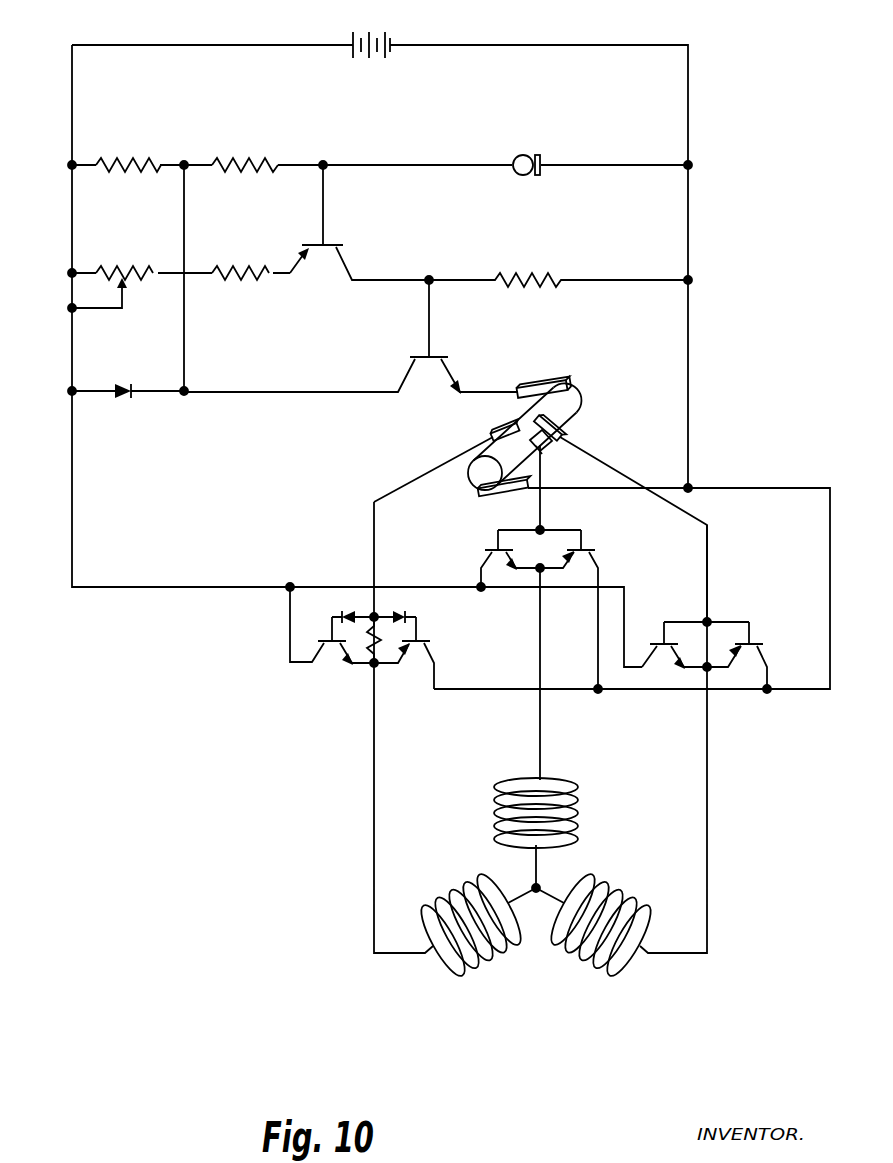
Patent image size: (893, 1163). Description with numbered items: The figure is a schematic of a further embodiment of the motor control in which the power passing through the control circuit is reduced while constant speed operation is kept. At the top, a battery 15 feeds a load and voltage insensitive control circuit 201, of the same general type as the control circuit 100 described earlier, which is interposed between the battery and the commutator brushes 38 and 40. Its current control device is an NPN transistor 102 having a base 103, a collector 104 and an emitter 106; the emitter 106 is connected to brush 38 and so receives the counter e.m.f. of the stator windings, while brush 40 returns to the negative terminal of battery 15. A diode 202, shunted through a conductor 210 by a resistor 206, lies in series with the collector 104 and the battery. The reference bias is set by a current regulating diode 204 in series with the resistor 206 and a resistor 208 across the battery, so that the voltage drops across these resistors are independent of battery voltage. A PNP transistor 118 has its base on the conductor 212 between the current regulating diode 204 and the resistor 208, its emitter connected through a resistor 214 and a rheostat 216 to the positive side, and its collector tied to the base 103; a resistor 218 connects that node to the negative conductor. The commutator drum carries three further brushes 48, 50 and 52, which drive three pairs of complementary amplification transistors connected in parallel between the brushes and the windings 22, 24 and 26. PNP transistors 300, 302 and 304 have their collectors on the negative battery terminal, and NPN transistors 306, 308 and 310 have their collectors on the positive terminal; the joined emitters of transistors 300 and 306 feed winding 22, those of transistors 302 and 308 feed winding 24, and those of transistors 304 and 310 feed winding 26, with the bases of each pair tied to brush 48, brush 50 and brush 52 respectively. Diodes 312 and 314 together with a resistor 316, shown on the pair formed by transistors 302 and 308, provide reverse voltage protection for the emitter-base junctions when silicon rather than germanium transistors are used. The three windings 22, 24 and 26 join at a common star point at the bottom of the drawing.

The battery 15 is at (393, 40).
The stator winding 22 is at (598, 965).
The stator winding 24 is at (460, 876).
The stator winding 26 is at (580, 806).
The brush 38 is at (542, 385).
The brush 40 is at (517, 487).
The brush 48 is at (575, 430).
The brush 50 is at (503, 427).
The brush 52 is at (548, 452).
The control circuit 100 is at (690, 203).
The current control device 102 is at (442, 356).
The base 103 is at (427, 308).
The collector 104 is at (405, 373).
The emitter 106 is at (455, 386).
The transistor 118 is at (325, 262).
The control circuit 201 is at (692, 247).
The diode 202 is at (126, 383).
The current regulating diode 204 is at (523, 154).
The resistor 206 is at (122, 153).
The resistor 208 is at (237, 152).
The conductor 210 is at (182, 316).
The conductor 212 is at (417, 160).
The resistor 214 is at (228, 270).
The rheostat 216 is at (116, 270).
The resistor 218 is at (535, 272).
The transistor 300 is at (755, 630).
The transistor 302 is at (428, 640).
The transistor 304 is at (600, 546).
The transistor 306 is at (660, 640).
The transistor 308 is at (322, 637).
The transistor 310 is at (487, 545).
The diode 312 is at (356, 600).
The diode 314 is at (398, 612).
The resistor 316 is at (372, 640).